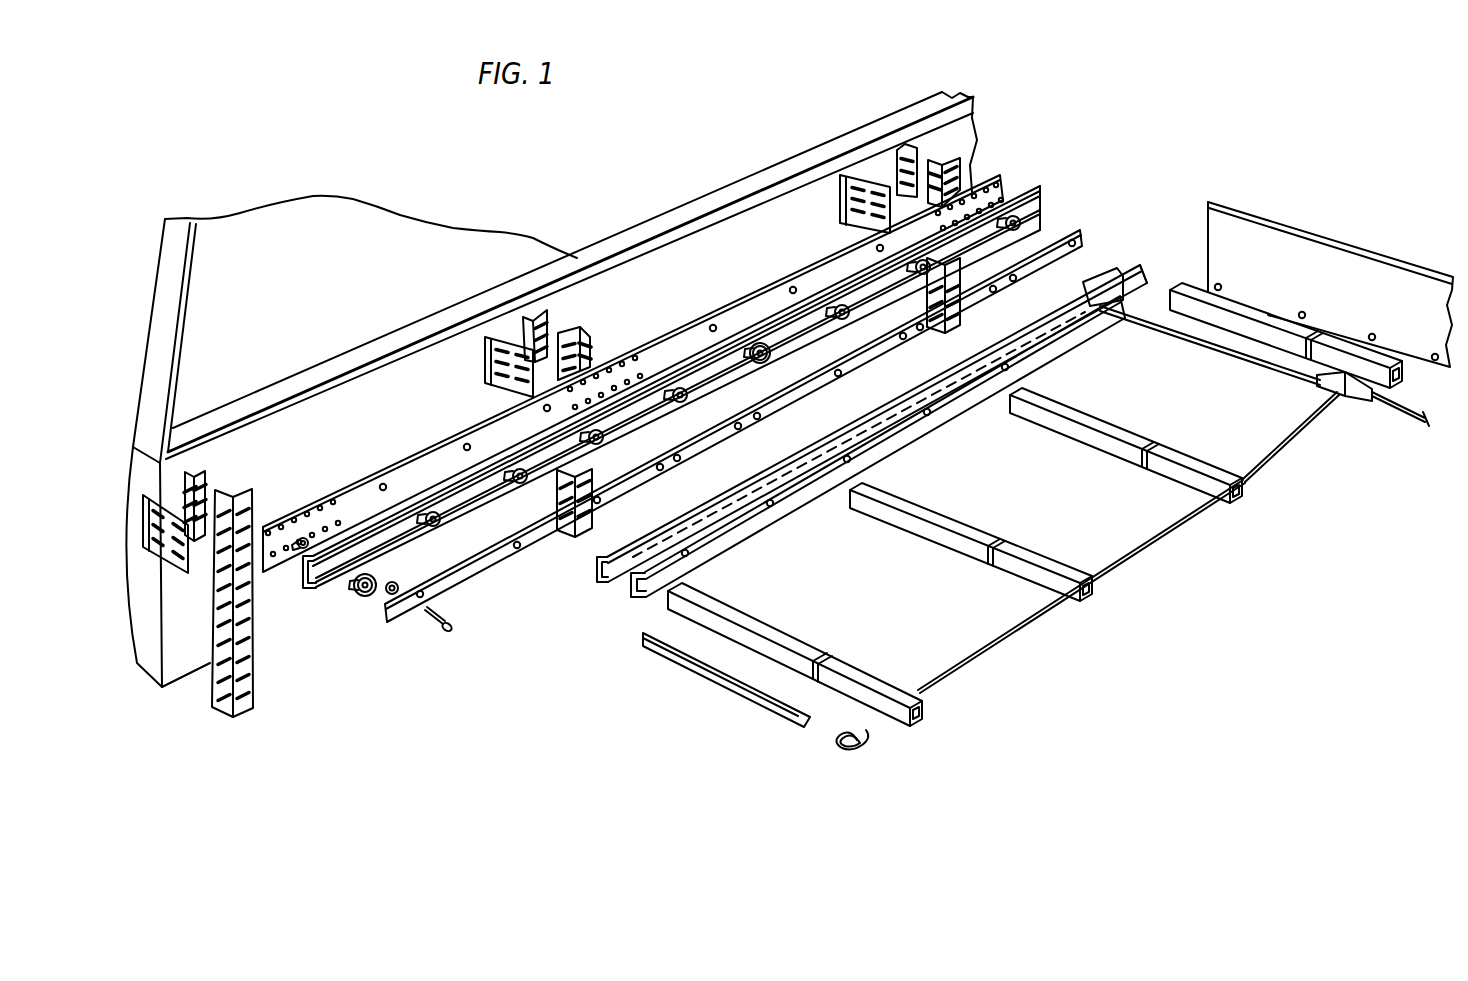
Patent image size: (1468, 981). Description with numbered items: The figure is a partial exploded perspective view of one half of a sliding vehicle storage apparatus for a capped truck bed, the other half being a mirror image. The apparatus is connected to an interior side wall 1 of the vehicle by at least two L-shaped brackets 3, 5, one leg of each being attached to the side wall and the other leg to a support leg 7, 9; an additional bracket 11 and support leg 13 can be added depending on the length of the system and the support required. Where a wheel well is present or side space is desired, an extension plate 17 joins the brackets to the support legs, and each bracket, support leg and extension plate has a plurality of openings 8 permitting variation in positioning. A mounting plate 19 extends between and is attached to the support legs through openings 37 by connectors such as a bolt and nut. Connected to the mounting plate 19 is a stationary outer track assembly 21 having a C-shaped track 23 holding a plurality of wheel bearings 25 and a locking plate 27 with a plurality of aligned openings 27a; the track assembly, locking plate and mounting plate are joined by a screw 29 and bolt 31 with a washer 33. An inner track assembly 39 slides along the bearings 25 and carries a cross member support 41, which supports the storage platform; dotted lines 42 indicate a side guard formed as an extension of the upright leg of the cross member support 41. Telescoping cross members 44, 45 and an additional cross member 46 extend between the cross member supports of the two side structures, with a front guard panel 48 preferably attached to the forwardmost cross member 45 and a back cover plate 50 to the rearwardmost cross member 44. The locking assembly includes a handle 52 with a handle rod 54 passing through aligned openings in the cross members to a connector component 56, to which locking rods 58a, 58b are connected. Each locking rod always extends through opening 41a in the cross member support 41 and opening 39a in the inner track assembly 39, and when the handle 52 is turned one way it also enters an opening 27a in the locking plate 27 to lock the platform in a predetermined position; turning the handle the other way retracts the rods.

The interior side wall 1 is at (710, 279).
The bracket 3 is at (205, 477).
The bracket 5 is at (905, 148).
The support leg 7 is at (252, 500).
The openings 8 is at (198, 472).
The support leg 9 is at (957, 160).
The additional bracket 11 is at (541, 313).
The additional support leg 13 is at (582, 340).
The extension plate 17 is at (842, 175).
The mounting plate 19 is at (443, 449).
The outer track assembly 21 is at (400, 657).
The track 23 is at (754, 348).
The wheel bearings 25 is at (602, 440).
The locking plate 27 is at (472, 561).
The openings 27a is at (521, 550).
The screw 29 is at (451, 622).
The bolt 31 is at (303, 537).
The washer 33 is at (399, 585).
The openings 37 is at (330, 508).
The inner track assembly 39 is at (600, 580).
The opening 39a is at (1082, 297).
The cross member support 41 is at (732, 548).
The opening 41a is at (1102, 311).
The side guard 42 is at (628, 566).
The cross member 44 is at (780, 644).
The cross member 45 is at (1234, 313).
The additional cross member 46 is at (927, 520).
The front guard panel 48 is at (1287, 237).
The back cover plate 50 is at (757, 708).
The handle 52 is at (855, 745).
The handle rod 54 is at (1152, 525).
The connector component 56 is at (1343, 400).
The locking rod 58a is at (1272, 371).
The locking rod 58b is at (1419, 425).